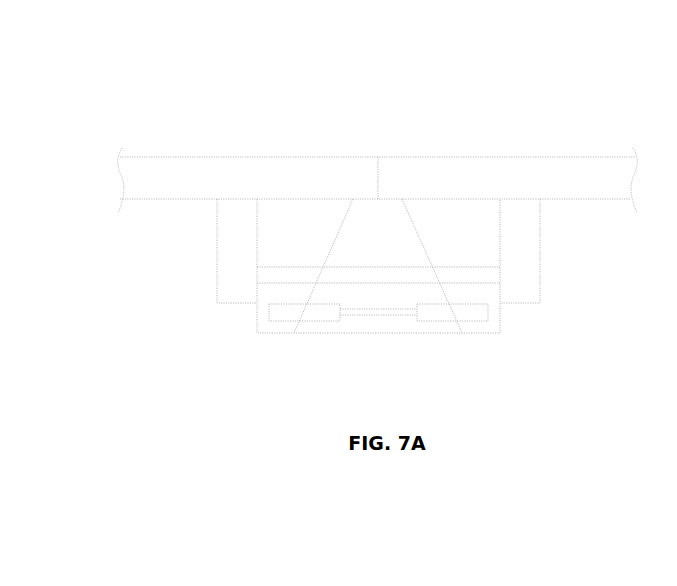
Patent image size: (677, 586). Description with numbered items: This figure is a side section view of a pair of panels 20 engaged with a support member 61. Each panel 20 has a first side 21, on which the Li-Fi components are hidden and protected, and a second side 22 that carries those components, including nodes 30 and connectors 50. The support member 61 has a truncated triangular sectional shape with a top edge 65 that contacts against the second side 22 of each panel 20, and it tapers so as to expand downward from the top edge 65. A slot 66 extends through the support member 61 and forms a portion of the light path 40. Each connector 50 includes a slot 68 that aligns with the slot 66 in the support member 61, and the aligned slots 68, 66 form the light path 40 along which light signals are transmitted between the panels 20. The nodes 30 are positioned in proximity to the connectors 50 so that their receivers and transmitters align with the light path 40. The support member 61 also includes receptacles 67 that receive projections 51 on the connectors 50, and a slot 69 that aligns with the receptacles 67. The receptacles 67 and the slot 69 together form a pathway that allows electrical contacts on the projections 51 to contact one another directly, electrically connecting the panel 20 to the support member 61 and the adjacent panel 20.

The panel 20 is at (168, 171).
The first side 21 is at (145, 157).
The second side 22 is at (160, 200).
The node 30 is at (238, 287).
The light path 40 is at (300, 275).
The connector 50 is at (283, 223).
The projection 51 is at (280, 312).
The support member 61 is at (398, 323).
The top edge 65 is at (370, 205).
The slot 66 is at (365, 273).
The receptacle 67 is at (317, 315).
The slot 68 is at (270, 275).
The slot 69 is at (380, 313).